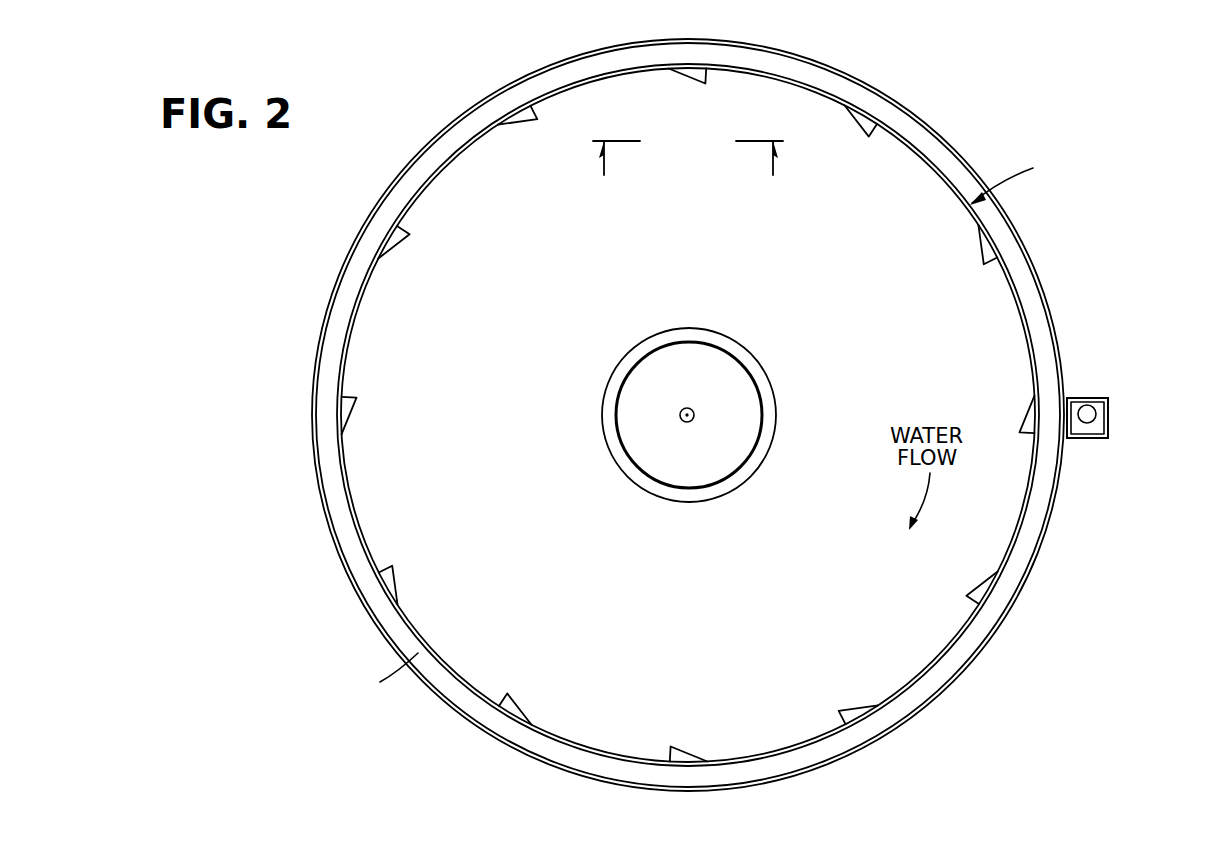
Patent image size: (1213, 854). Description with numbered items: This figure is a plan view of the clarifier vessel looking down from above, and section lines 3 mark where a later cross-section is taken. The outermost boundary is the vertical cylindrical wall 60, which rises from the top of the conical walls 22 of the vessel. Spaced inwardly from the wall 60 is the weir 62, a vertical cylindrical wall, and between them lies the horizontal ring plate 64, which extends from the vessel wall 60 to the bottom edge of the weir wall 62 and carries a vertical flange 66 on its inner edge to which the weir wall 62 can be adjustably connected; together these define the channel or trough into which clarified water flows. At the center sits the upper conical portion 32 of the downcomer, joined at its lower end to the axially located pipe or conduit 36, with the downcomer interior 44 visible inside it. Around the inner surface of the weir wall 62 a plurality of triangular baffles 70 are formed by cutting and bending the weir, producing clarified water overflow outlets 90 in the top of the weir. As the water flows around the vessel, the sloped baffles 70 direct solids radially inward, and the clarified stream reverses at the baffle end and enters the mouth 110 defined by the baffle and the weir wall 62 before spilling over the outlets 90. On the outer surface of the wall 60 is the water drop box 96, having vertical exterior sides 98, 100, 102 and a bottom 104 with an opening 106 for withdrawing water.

The walls 22 is at (746, 633).
The upper conical portion 32 is at (756, 351).
The pipe or conduit 36 is at (694, 418).
The hub inner wall 44 is at (695, 363).
The vertical cylindrical wall 60 is at (325, 313).
The weir 62 is at (350, 486).
The horizontal ring plate 64 is at (380, 679).
The vertical flange 66 is at (1019, 177).
The baffles 70 is at (522, 121).
The clarified water overflow outlets 90 is at (513, 113).
The water drop box 96 is at (1127, 426).
The vertical exterior side 98 is at (1079, 397).
The vertical exterior side 100 is at (1110, 408).
The vertical exterior side 102 is at (1097, 439).
The bottom 104 is at (1076, 432).
The opening 106 is at (1095, 419).
The mouth 110 is at (501, 693).
The section line 3- 3 is at (690, 172).